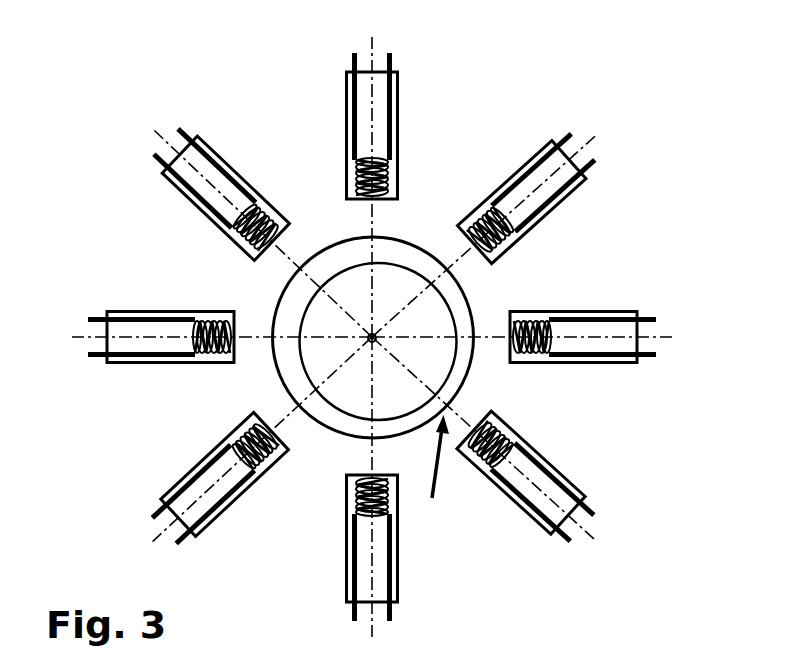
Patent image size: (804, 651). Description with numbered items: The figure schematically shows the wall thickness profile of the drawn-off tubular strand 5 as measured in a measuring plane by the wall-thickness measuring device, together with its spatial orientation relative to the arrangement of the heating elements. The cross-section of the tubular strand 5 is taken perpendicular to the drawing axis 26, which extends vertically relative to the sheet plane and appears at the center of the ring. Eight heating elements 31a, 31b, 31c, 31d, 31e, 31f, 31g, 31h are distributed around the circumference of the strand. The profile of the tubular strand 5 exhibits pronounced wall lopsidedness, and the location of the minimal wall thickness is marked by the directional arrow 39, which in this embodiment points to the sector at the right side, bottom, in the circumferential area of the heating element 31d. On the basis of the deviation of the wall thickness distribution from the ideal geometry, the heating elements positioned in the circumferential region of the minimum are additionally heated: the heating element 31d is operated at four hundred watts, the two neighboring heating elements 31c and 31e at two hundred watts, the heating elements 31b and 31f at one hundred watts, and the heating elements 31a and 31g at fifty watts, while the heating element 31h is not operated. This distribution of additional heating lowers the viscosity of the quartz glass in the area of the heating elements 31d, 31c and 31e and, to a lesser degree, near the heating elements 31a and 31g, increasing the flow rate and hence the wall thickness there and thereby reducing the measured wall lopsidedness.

The tubular strand 5 is at (372, 337).
The drawing axis 26 is at (372, 337).
The directional arrow 39 is at (430, 474).
The heating element 31a is at (373, 103).
The heating element 31b is at (543, 145).
The heating element 31c is at (593, 320).
The heating element 31d is at (555, 467).
The heating element 31e is at (397, 570).
The heating element 31f is at (210, 495).
The heating element 31g is at (135, 310).
The heating element 31h is at (205, 140).